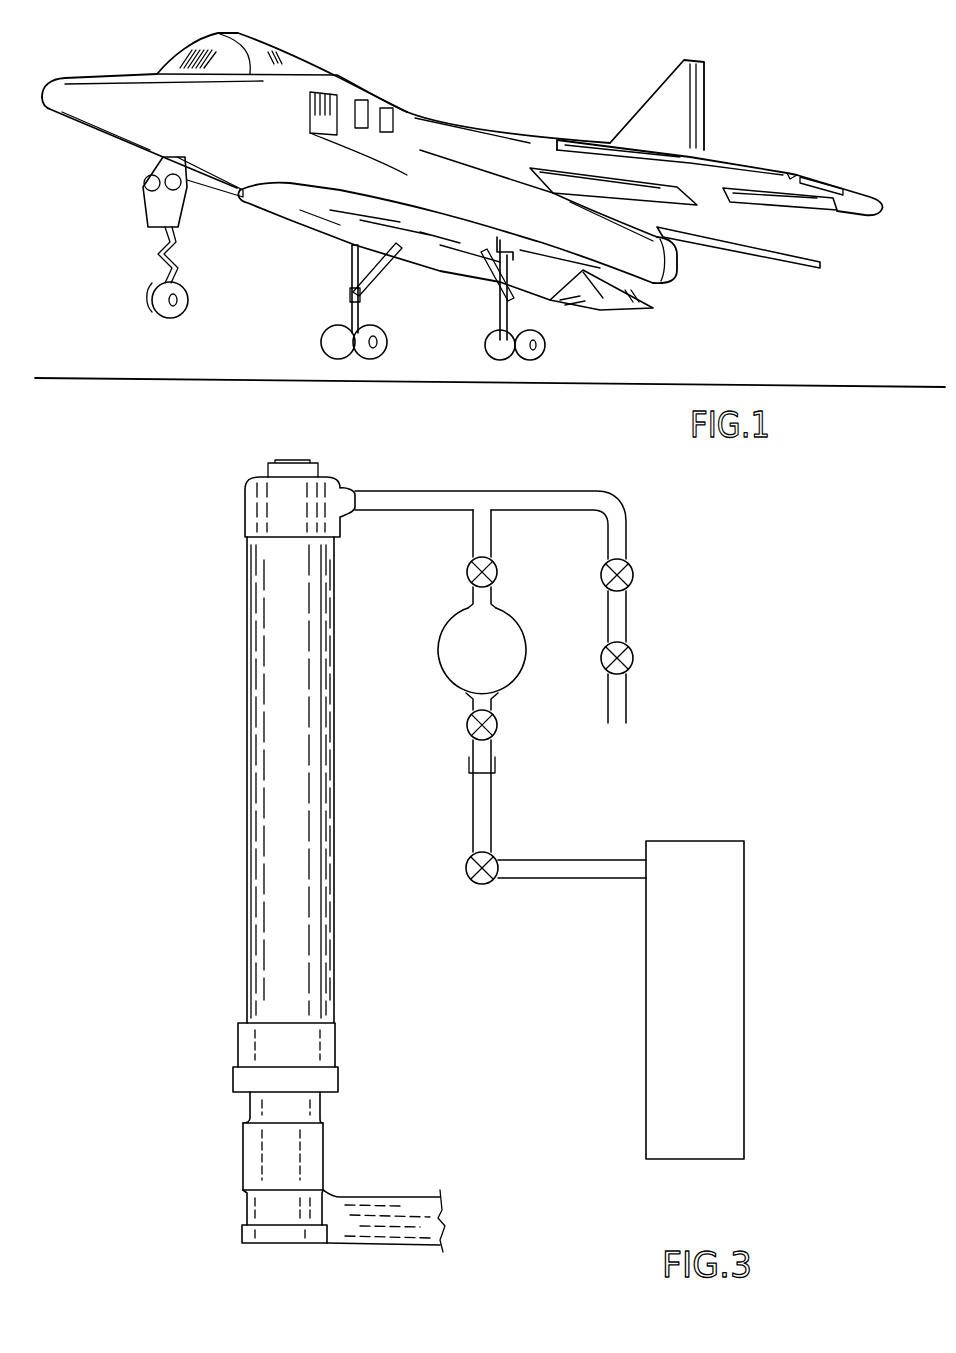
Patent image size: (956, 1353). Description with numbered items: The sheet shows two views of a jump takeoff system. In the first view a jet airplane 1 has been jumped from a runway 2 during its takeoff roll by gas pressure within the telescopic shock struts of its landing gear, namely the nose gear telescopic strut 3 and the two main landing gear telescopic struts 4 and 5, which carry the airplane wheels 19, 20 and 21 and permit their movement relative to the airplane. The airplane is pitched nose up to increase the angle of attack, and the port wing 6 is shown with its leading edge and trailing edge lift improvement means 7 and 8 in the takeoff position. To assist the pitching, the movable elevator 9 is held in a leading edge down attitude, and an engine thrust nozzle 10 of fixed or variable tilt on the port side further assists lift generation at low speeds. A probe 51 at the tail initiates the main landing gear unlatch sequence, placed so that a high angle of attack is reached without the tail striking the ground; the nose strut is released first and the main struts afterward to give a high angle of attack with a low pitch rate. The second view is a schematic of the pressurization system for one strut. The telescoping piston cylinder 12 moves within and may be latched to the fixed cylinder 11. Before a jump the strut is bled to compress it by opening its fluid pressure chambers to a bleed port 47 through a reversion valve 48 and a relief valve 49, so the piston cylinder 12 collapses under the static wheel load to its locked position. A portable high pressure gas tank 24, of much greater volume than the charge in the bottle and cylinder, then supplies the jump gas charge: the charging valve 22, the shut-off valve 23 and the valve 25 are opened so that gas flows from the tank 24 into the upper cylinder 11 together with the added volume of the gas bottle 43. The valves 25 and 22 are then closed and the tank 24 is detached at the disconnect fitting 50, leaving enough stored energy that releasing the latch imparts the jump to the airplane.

In FIG. 1, the jet airplane 1 is at (462, 189).
In FIG. 1, the runway 2 is at (803, 386).
In FIG. 1, the nose gear telescopic strut 3 is at (178, 255).
In FIG. 1, the main landing gear telescopic strut 4 is at (515, 305).
In FIG. 1, the main landing gear telescopic strut 5 is at (352, 274).
In FIG. 1, the port wing 6 is at (557, 140).
In FIG. 1, the leading edge lift improvement means 7 is at (743, 163).
In FIG. 1, the trailing edge lift improvement means 8 is at (742, 212).
In FIG. 1, the movable elevator 9 is at (735, 258).
In FIG. 1, the engine thrust nozzle 10 is at (675, 262).
In FIG. 1, the airplane wheel 19 is at (158, 318).
In FIG. 1, the airplane wheel 20 is at (538, 358).
In FIG. 1, the airplane wheel 21 is at (340, 360).
In FIG. 1, the probe 51 is at (655, 302).
In FIG. 3, the fixed cylinder 11 is at (247, 658).
In FIG. 3, the telescoping piston cylinder 12 is at (243, 1147).
In FIG. 3, the charging valve 22 is at (497, 727).
In FIG. 3, the shut-off valve 23 is at (497, 573).
In FIG. 3, the portable high pressure gas tank 24 is at (744, 872).
In FIG. 3, the valve 25 is at (493, 857).
In FIG. 3, the gas bottle 43 is at (522, 632).
In FIG. 3, the bleed port 47 is at (617, 725).
In FIG. 3, the reversion valve 48 is at (633, 569).
In FIG. 3, the relief valve 49 is at (633, 655).
In FIG. 3, the disconnect fitting 50 is at (493, 820).